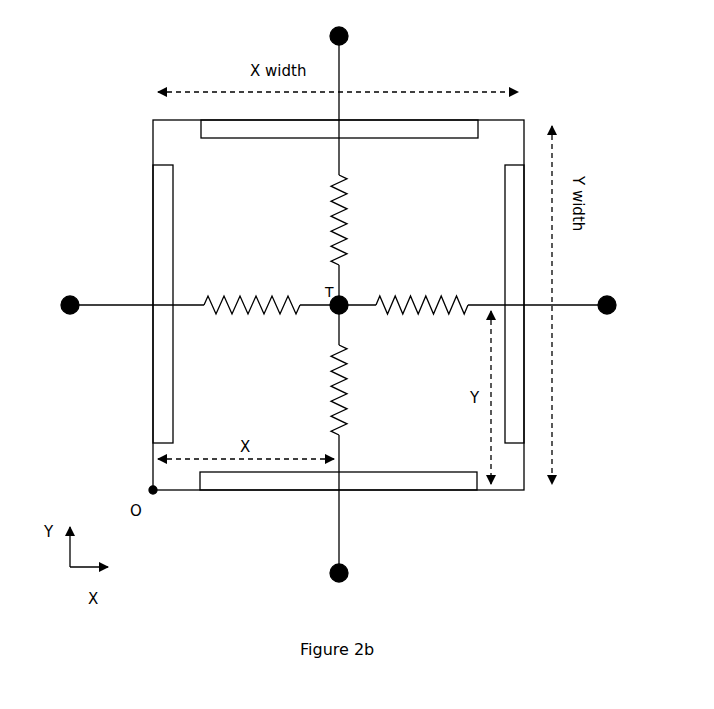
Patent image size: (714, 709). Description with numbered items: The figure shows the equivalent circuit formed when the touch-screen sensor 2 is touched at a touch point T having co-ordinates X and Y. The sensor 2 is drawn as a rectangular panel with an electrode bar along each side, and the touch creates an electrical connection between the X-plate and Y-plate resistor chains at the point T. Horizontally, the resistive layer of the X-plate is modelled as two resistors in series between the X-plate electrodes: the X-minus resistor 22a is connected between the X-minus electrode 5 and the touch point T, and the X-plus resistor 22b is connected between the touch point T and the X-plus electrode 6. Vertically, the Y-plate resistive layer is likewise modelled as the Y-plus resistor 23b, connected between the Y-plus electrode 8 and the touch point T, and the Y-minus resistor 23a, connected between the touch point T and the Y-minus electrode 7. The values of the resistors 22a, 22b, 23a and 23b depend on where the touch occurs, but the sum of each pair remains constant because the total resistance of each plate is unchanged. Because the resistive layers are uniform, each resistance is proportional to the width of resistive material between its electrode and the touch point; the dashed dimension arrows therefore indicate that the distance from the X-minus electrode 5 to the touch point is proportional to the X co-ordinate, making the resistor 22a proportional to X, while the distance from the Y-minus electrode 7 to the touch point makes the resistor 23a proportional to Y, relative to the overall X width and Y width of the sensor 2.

The sensor 2 is at (485, 116).
The X− electrode 5 is at (61, 317).
The X+ electrode 6 is at (596, 317).
The Y− electrode 7 is at (329, 566).
The Y+ electrode 8 is at (331, 29).
The resistor R_X− 22a is at (246, 312).
The resistor R_X+ 22b is at (410, 312).
The resistor R_Y− 23a is at (330, 377).
The resistor R_Y+ 23b is at (330, 212).